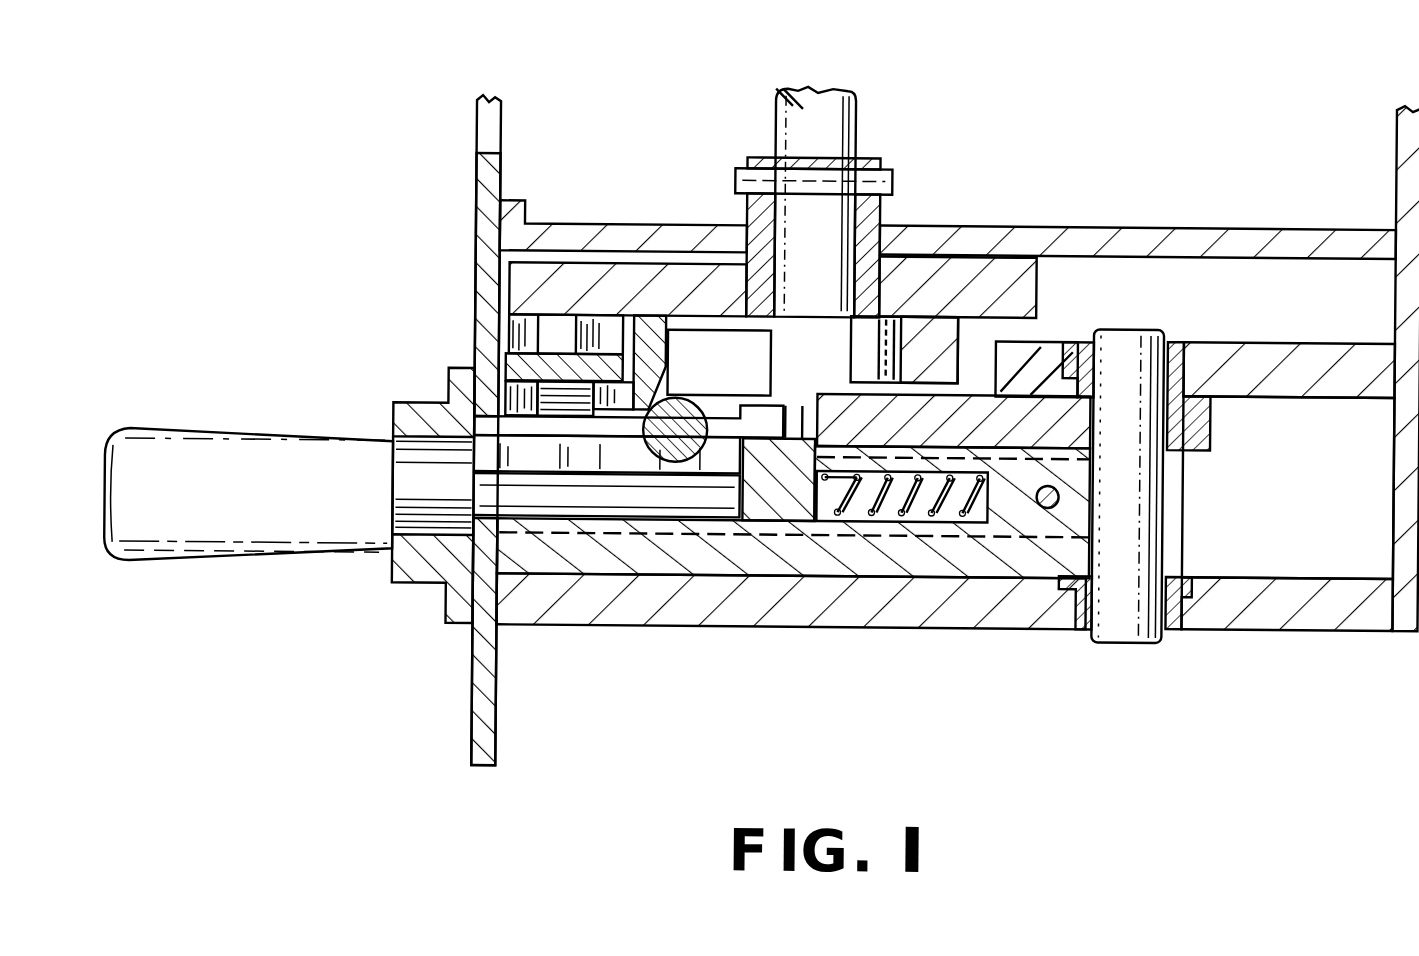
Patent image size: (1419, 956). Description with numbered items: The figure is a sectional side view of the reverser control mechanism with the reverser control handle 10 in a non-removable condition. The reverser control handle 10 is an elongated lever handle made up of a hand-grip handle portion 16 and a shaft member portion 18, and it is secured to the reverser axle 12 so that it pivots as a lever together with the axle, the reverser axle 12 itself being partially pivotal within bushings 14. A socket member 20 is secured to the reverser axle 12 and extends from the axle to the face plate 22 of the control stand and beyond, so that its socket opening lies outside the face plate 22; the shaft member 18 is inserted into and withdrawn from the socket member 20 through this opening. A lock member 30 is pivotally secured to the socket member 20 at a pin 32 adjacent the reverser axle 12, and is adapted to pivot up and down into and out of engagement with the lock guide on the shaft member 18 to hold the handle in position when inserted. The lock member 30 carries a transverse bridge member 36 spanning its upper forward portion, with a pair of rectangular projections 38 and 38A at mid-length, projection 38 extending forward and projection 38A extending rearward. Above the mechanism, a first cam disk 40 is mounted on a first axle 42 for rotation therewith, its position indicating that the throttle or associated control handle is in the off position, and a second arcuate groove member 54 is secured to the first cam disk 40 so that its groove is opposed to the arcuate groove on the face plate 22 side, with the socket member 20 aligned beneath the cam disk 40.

The reverser control handle 10 is at (194, 419).
The reverser axle 12 is at (1144, 341).
The bushings 14 is at (1076, 359).
The hand-grip handle portion 16 is at (212, 540).
The shaft member portion 18 is at (435, 586).
The socket member 20 is at (394, 420).
The face plate 22 is at (475, 212).
The lock member 30 is at (726, 600).
The pin 32 is at (1037, 509).
The transverse bridge member 36 is at (535, 401).
The rectangular projection 38 is at (505, 358).
The rectangular projection 38A is at (607, 370).
The first cam disk 40 is at (983, 278).
The first axle 42 is at (810, 111).
The second arcuate groove member 54 is at (647, 316).